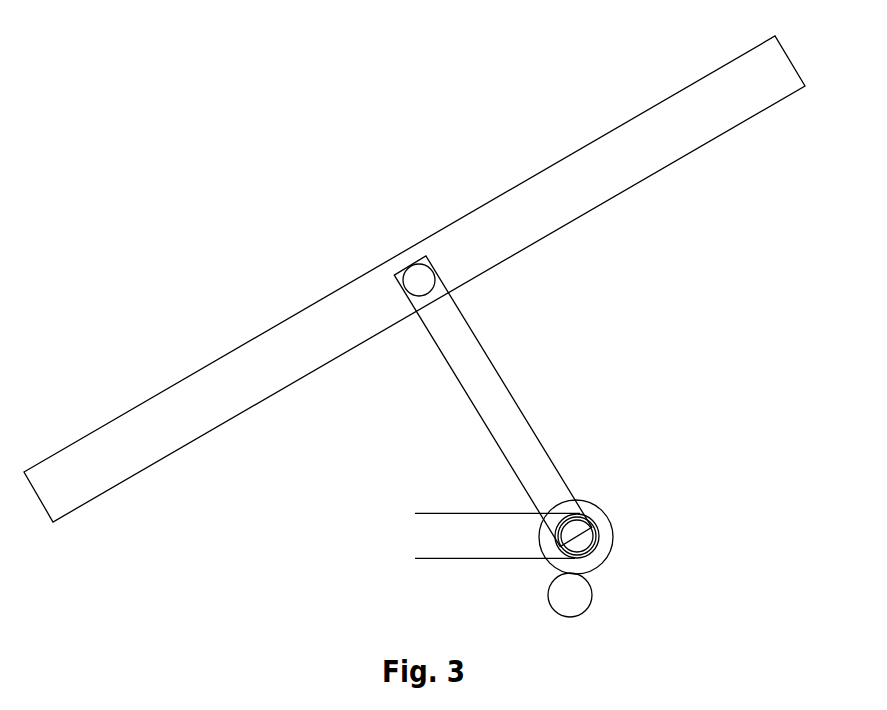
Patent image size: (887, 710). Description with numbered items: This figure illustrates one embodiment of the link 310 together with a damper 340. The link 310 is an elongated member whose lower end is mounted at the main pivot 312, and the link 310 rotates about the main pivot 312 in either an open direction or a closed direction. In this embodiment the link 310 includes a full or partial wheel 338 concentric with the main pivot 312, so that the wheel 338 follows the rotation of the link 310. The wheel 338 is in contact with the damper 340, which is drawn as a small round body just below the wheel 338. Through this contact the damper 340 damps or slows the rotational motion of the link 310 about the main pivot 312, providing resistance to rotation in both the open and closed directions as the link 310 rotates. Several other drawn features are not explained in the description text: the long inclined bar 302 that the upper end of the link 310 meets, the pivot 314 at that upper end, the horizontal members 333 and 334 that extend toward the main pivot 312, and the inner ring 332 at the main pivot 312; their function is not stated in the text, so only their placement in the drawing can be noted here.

The bar 302 is at (198, 370).
The link 310 is at (480, 345).
The pivot 314 is at (420, 280).
The main pivot 312 is at (592, 535).
The wheel 338 is at (613, 537).
The bearing 332 is at (590, 555).
The upper rail 333 is at (490, 513).
The lower rail 334 is at (463, 558).
The damper 340 is at (578, 615).